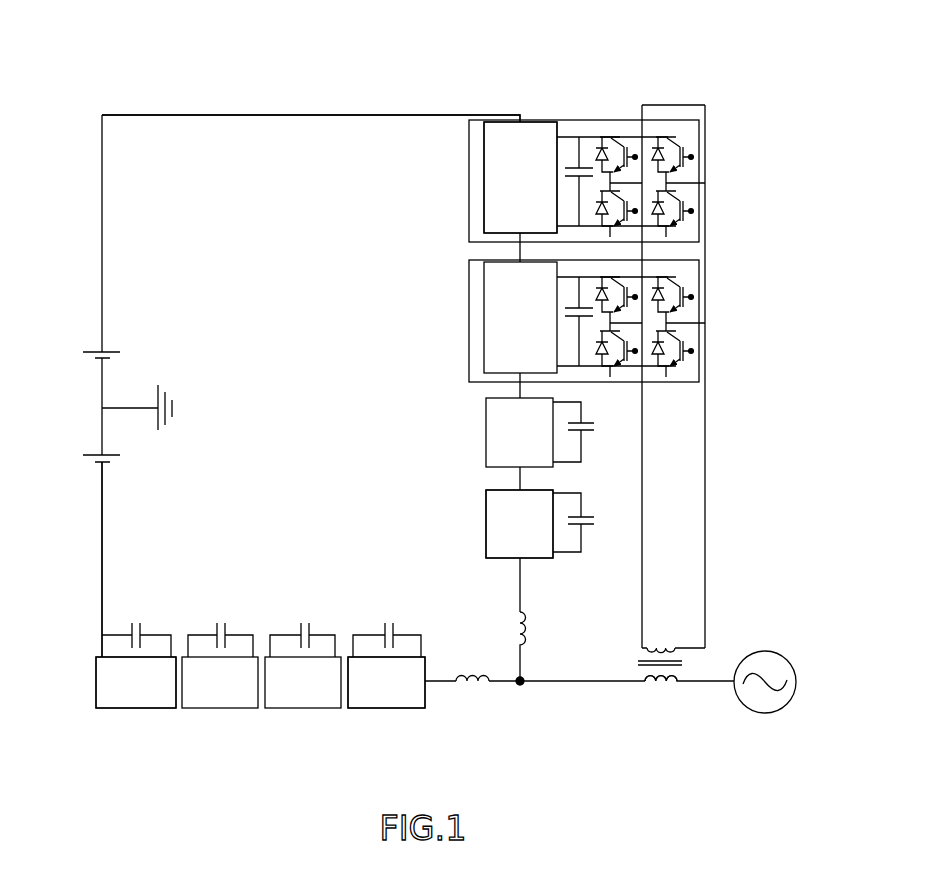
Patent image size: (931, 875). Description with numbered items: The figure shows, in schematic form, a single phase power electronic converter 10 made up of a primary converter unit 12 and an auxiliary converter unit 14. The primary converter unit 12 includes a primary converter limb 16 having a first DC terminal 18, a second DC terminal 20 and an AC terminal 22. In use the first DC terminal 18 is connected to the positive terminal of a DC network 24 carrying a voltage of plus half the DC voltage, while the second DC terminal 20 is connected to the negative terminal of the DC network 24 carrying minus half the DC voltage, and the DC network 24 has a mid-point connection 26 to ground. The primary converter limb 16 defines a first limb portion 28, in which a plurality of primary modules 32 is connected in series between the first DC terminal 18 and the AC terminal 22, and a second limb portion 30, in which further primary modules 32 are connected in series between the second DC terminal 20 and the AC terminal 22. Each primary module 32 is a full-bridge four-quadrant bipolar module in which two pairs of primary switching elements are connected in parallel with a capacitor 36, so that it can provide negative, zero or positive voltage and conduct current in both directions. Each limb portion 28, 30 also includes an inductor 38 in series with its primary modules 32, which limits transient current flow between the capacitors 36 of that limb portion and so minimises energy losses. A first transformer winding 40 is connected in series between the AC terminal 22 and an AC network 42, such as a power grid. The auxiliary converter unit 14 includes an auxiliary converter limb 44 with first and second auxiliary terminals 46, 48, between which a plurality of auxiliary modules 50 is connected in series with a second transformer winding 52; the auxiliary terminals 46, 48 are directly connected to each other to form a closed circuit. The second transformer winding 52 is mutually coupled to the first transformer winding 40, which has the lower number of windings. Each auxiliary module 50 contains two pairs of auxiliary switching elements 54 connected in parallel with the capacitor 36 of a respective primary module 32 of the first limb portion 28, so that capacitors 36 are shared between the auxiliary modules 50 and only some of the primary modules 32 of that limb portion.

The power electronic converter 10 is at (283, 108).
The primary converter unit 12 is at (617, 309).
The primary converter limb 16 is at (617, 309).
The auxiliary converter unit 14 is at (690, 344).
The auxiliary converter limb 44 is at (690, 344).
The first DC terminal 18 is at (520, 115).
The second DC terminal 20 is at (102, 635).
The AC terminal 22 is at (524, 680).
The DC network 24 is at (185, 385).
The mid-point connection 26 is at (102, 408).
The first limb portion 28 is at (360, 248).
The second limb portion 30 is at (260, 593).
The primary module 32 is at (492, 183).
The capacitor 36 is at (578, 162).
The inductor 38 is at (477, 667).
The first transformer winding 40 is at (650, 685).
The AC network 42 is at (770, 663).
The first auxiliary terminal 46 is at (642, 105).
The second auxiliary terminal 48 is at (708, 647).
The auxiliary module 50 is at (700, 267).
The second transformer winding 52 is at (672, 648).
The auxiliary switching element 54 is at (668, 188).